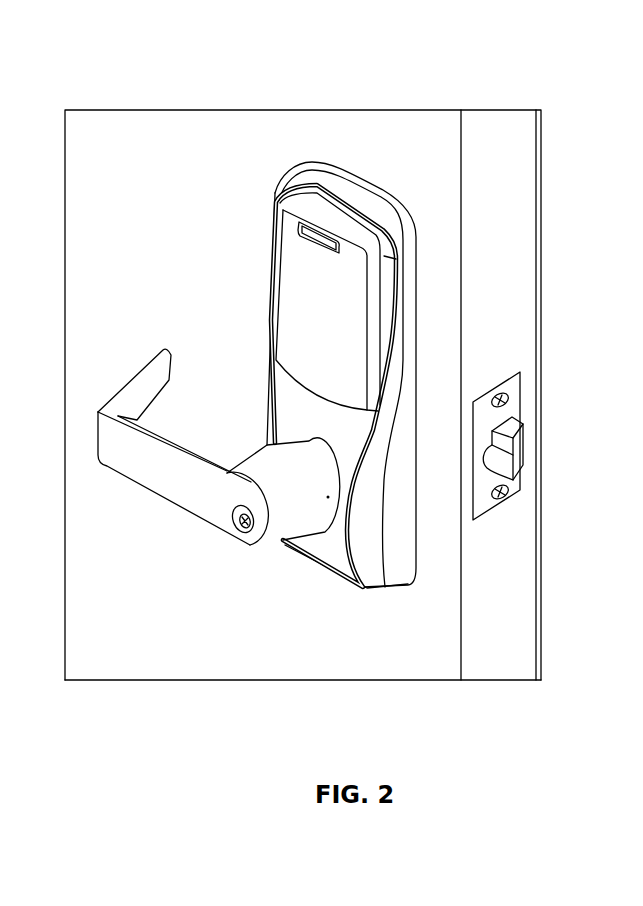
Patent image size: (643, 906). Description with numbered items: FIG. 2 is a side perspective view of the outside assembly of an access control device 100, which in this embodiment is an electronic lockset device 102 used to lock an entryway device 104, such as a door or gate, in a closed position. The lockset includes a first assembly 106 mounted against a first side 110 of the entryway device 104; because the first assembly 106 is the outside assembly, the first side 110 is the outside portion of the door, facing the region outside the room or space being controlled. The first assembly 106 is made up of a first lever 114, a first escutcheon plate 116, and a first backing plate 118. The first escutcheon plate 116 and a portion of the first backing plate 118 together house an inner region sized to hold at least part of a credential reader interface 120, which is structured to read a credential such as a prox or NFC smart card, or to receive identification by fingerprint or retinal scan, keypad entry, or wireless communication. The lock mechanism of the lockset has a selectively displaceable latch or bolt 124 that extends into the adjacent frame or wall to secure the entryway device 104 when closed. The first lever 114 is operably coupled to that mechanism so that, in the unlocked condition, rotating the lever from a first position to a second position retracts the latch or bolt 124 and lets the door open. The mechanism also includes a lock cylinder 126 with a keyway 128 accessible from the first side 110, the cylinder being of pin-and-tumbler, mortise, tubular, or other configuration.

The access control device 100 is at (365, 124).
The electronic lockset device 102 is at (262, 355).
The entryway device 104 is at (512, 229).
The first assembly 106 is at (337, 561).
The first side 110 is at (432, 677).
The first lever 114 is at (176, 484).
The first escutcheon plate 116 is at (302, 542).
The first backing plate 118 is at (400, 568).
The credential reader interface 120 is at (313, 288).
The latch or bolt 124 is at (517, 458).
The lock cylinder 126 is at (233, 512).
The keyway 128 is at (245, 522).